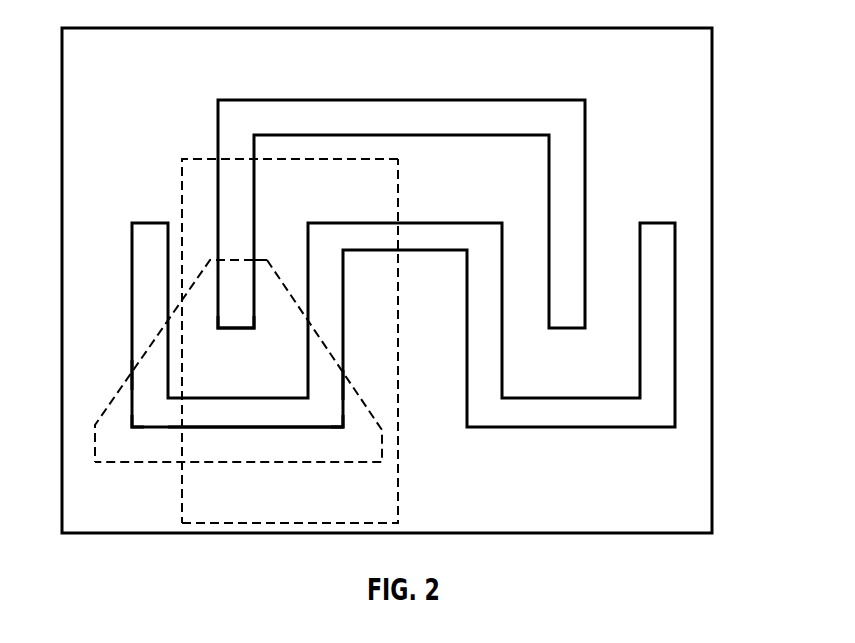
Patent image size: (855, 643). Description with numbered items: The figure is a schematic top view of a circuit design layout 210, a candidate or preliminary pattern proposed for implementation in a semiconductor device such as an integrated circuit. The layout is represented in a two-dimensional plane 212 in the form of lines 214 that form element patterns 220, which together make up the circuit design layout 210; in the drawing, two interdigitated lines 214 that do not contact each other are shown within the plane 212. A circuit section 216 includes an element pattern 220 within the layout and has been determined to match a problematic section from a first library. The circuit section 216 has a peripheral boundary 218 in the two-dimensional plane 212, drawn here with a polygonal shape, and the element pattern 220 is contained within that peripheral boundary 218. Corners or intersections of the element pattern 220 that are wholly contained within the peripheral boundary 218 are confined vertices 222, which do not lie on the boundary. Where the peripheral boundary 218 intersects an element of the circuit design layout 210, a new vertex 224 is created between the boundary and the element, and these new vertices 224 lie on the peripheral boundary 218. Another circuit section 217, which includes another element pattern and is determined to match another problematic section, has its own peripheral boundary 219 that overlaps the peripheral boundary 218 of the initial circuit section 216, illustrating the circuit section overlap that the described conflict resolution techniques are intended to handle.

The circuit design layout 210 is at (603, 93).
The two-dimensional plane 212 is at (712, 280).
The lines 214 is at (404, 100).
The circuit section 216 is at (283, 463).
The another circuit section 217 is at (398, 200).
The peripheral boundary 218 is at (100, 420).
The peripheral boundary 219 is at (182, 186).
The element pattern 220 is at (233, 432).
The confined vertex 222 is at (218, 331).
The new vertex 224 is at (132, 373).